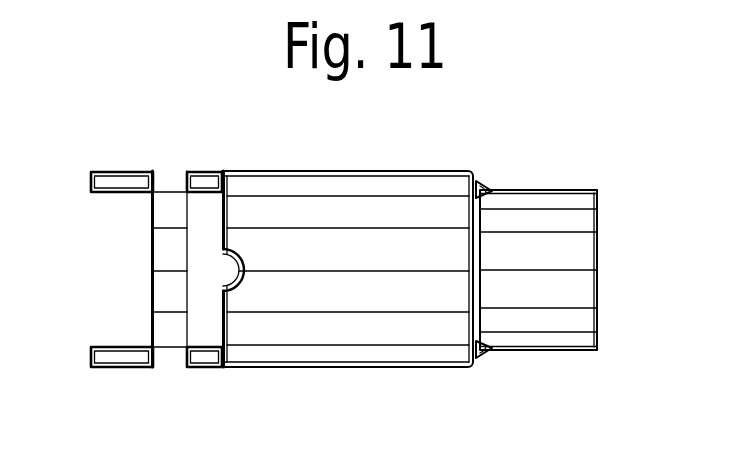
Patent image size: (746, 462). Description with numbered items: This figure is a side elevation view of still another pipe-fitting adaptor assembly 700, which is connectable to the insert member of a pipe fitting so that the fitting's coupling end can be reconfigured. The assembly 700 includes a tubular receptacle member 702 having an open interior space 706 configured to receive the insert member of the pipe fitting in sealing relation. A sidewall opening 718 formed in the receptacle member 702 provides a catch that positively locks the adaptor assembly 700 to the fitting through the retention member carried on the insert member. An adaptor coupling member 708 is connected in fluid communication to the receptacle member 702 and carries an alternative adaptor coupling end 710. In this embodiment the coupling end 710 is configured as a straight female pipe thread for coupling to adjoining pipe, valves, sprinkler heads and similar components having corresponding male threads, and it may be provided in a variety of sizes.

The pipe-fitting adaptor assembly 700 is at (262, 118).
The tubular receptacle member 702 is at (383, 192).
The open interior space 706 is at (206, 187).
The adaptor coupling member 708 is at (517, 223).
The adaptor coupling end 710 is at (598, 322).
The sidewall opening 718 is at (188, 332).